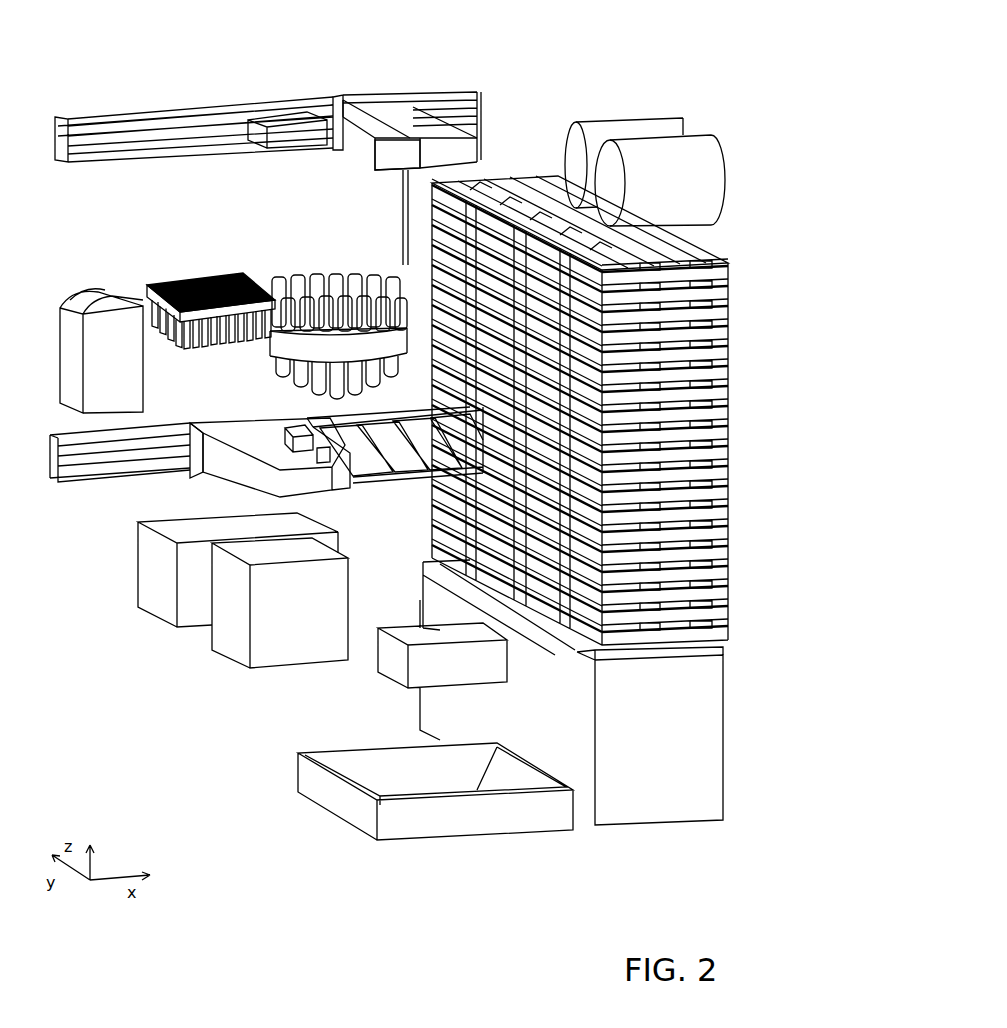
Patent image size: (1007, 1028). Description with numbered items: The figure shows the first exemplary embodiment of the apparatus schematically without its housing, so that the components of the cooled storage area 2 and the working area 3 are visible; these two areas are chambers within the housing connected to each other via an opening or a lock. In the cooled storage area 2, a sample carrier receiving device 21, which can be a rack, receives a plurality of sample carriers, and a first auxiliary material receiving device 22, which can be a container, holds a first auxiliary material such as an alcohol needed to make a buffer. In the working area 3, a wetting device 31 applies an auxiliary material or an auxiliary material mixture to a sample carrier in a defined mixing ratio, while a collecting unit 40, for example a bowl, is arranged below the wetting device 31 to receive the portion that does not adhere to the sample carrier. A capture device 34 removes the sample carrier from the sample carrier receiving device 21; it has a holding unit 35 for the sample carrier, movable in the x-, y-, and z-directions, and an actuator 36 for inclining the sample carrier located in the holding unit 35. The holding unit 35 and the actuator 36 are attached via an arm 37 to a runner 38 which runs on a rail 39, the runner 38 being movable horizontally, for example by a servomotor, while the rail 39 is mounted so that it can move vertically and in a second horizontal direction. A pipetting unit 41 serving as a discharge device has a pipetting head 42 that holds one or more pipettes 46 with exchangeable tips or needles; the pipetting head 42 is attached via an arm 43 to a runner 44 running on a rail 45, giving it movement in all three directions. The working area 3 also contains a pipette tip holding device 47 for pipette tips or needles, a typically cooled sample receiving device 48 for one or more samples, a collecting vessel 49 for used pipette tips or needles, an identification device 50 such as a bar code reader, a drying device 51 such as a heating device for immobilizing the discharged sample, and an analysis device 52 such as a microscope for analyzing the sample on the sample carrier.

The cooled storage area 2 is at (683, 862).
The working area 3 is at (470, 880).
The sample carrier receiving device 21 is at (735, 352).
The first auxiliary material receiving device 22 is at (650, 130).
The wetting device 31 is at (395, 658).
The capture device 34 is at (245, 472).
The holding unit 35 is at (572, 647).
The actuator 36 is at (290, 430).
The arm 37 is at (322, 488).
The runner 38 is at (190, 472).
The rail 39 is at (158, 450).
The collecting unit 40 is at (315, 793).
The pipetting unit 41 is at (398, 118).
The pipetting head 42 is at (372, 157).
The arm 43 is at (378, 108).
The runner 44 is at (333, 100).
The rail 45 is at (122, 132).
The pipettes 46 is at (404, 203).
The pipette tip holding device 47 is at (205, 290).
The sample receiving device 48 is at (320, 290).
The collecting vessel 49 is at (75, 330).
The identification device 50 is at (280, 115).
The drying device 51 is at (150, 597).
The analysis device 52 is at (232, 640).